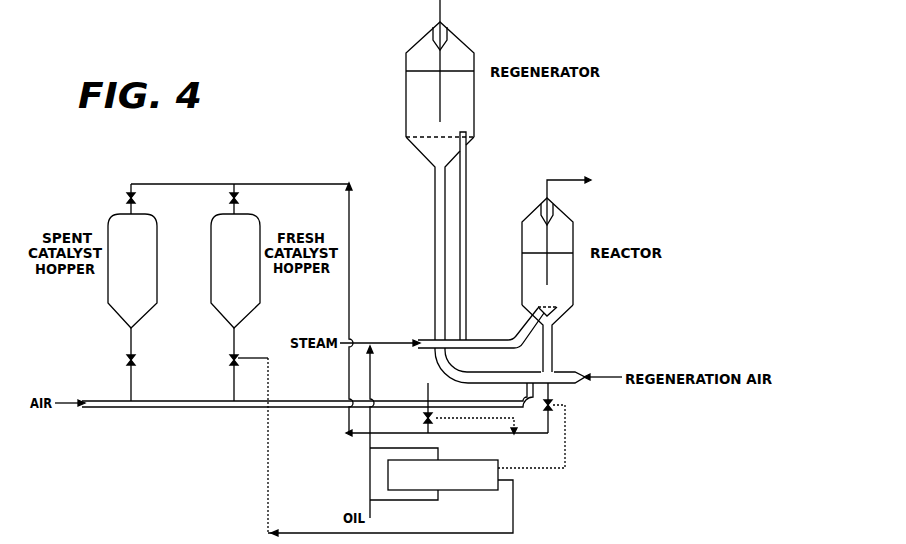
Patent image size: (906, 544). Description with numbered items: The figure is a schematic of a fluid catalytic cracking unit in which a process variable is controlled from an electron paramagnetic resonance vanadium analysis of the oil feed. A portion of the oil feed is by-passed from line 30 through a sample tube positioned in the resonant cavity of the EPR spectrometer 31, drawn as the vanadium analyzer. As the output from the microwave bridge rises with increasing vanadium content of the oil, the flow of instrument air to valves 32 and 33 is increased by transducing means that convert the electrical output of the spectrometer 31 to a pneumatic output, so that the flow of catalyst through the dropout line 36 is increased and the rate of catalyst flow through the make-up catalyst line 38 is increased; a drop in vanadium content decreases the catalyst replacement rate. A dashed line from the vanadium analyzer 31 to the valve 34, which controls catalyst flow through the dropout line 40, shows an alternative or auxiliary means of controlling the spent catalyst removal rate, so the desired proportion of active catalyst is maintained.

The oil feed line 30 is at (372, 511).
The EPR spectrometer 31 is at (468, 460).
The valve 32 is at (424, 418).
The valve 33 is at (243, 357).
The valve 34 is at (553, 408).
The dropout line 36 is at (428, 384).
The make-up catalyst line 38 is at (233, 386).
The dropout line 40 is at (549, 390).